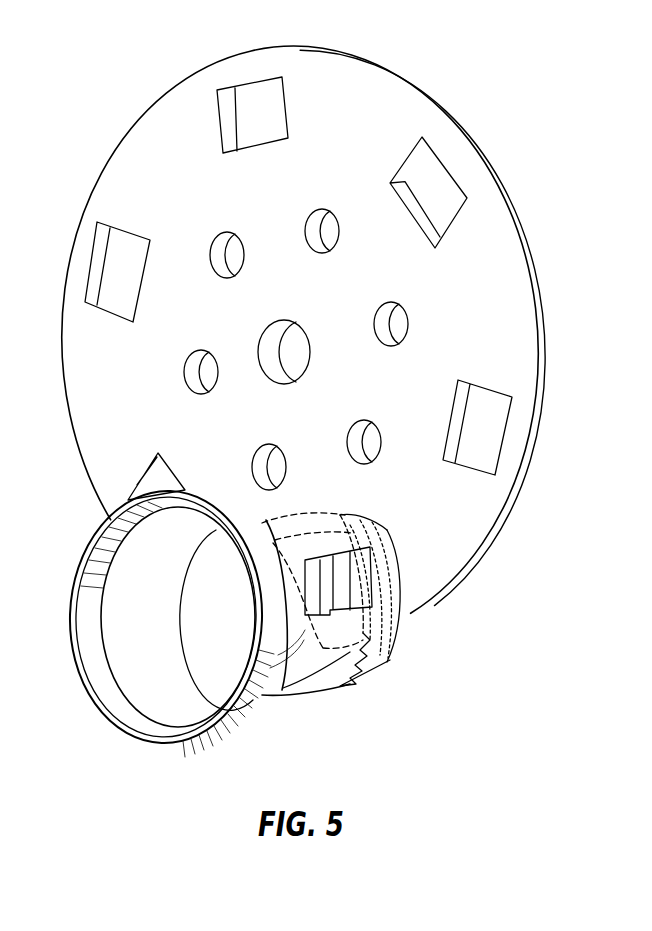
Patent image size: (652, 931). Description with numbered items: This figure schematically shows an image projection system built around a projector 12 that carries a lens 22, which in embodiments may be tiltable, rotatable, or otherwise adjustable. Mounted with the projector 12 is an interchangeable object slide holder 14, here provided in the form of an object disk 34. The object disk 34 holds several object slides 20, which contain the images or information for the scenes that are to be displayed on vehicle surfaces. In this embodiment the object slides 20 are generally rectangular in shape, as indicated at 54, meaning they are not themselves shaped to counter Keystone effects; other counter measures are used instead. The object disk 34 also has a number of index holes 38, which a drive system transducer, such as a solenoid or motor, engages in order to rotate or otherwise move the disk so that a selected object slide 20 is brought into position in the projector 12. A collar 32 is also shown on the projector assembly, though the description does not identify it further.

The projector 12 is at (247, 631).
The interchangeable object slide holder 14 is at (355, 329).
The object slides 20 is at (265, 118).
The lens 22 is at (205, 738).
The knurled collar 32 is at (343, 703).
The object disk 34 is at (492, 323).
The index holes 38 is at (318, 213).
The generally rectangular shape 54 is at (95, 275).